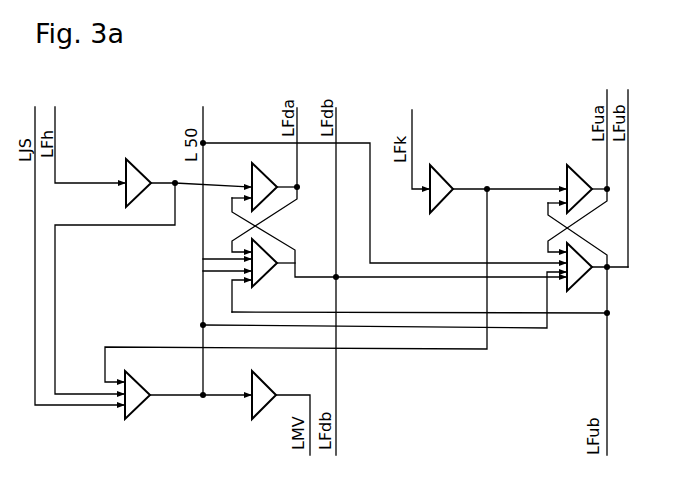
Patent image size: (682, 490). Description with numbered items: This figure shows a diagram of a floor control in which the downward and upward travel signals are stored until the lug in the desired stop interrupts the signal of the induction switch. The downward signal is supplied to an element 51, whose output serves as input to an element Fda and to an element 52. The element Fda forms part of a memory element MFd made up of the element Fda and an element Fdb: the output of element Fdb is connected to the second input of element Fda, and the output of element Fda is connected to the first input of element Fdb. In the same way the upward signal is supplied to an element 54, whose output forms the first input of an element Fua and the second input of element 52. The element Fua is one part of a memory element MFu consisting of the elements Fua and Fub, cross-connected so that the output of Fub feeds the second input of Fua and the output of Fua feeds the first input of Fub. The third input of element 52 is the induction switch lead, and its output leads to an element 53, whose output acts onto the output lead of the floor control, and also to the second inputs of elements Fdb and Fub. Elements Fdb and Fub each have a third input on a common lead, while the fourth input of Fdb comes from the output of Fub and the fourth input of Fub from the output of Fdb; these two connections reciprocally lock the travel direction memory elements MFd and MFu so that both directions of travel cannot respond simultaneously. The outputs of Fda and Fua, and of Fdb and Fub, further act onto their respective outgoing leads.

The element 51 is at (139, 177).
The element 52 is at (137, 386).
The element 53 is at (263, 390).
The element 54 is at (439, 179).
The element Fda is at (264, 174).
The element Fdb is at (263, 273).
The memory element MFd is at (399, 233).
The element Fua is at (578, 182).
The element Fub is at (577, 276).
The memory element MFu is at (581, 228).